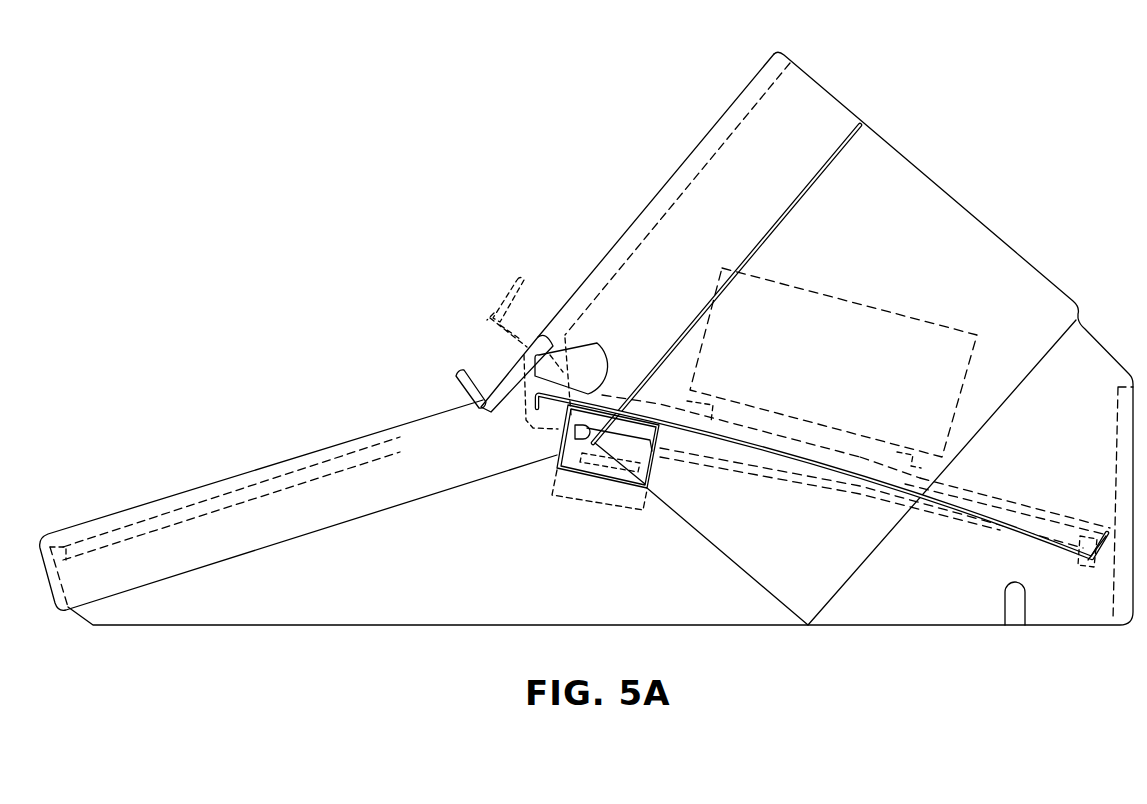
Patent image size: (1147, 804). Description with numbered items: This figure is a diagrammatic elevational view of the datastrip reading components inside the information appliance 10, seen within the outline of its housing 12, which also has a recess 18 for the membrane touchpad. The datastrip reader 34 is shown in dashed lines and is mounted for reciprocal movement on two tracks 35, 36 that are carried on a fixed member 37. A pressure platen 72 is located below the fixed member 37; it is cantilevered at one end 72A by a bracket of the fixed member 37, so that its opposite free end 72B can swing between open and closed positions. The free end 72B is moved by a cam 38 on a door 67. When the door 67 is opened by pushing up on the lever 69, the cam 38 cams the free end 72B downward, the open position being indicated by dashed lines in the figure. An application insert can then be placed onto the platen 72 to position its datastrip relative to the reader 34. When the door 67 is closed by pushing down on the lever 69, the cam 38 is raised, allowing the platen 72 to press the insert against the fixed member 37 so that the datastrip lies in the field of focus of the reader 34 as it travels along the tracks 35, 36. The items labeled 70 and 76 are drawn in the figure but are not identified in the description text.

The information appliance 10 is at (935, 169).
The housing 12 is at (833, 101).
The recess 18 is at (240, 492).
The datastrip reader 34 is at (833, 297).
The track 35 is at (704, 406).
The track 36 is at (902, 462).
The fixed member 37 is at (1000, 508).
The cam 38 is at (588, 364).
The door 67 is at (512, 364).
The lever 69 is at (458, 385).
The corner pad 70 is at (65, 550).
The pressure platen 72 is at (783, 478).
The cantilevered end of platen 72A is at (1094, 566).
The free end of platen 72B is at (530, 434).
The stop 76 is at (1097, 533).